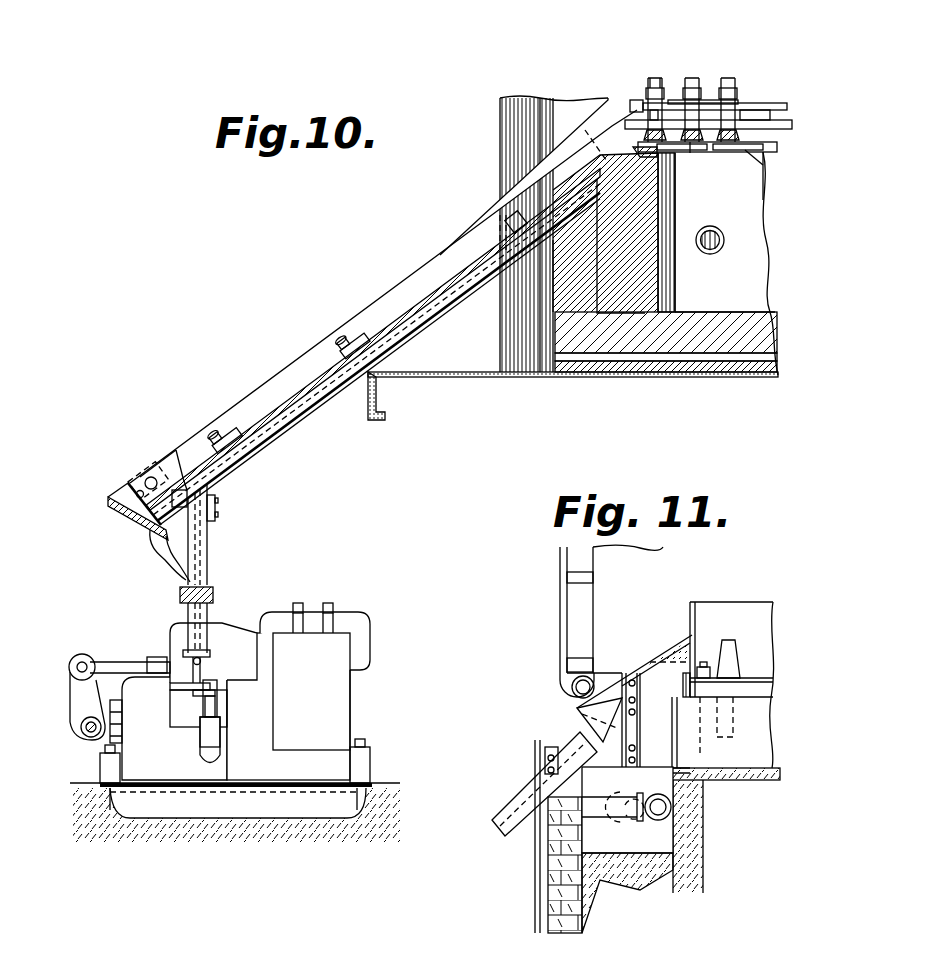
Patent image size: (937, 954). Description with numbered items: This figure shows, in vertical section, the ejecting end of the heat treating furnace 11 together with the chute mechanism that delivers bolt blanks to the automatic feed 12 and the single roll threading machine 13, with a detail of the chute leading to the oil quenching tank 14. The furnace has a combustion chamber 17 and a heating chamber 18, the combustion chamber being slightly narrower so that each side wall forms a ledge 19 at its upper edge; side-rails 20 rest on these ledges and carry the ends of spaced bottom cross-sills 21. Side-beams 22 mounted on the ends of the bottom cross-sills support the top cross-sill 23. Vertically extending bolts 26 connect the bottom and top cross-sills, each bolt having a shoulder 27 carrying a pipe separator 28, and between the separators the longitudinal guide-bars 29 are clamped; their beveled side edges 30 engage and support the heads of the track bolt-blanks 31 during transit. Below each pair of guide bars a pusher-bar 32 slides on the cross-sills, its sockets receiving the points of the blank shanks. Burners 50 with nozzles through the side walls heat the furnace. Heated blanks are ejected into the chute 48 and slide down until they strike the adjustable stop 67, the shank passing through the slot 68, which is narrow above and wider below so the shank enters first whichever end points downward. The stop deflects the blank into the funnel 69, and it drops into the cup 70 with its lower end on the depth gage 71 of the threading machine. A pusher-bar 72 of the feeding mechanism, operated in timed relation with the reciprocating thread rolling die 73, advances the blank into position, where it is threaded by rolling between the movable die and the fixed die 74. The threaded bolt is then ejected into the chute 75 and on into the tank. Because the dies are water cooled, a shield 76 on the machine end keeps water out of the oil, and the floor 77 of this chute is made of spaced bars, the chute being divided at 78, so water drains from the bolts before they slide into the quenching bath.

In FIG. 10, the heat treating furnace 11 is at (640, 350).
In FIG. 10, the automatic feed 12 is at (208, 563).
In FIG. 10, the single roll threading machine 13 is at (340, 698).
In FIG. 11, the single roll threading machine 13 is at (752, 731).
In FIG. 11, the tank 14 is at (537, 867).
In FIG. 10, the combustion chamber 17 is at (790, 285).
In FIG. 10, the heating chamber 18 is at (757, 80).
In FIG. 10, the ledge 19 is at (765, 200).
In FIG. 10, the side-rails 20 is at (745, 150).
In FIG. 10, the bottom cross-sills 21 is at (705, 130).
In FIG. 10, the side-beams 22 is at (747, 97).
In FIG. 10, the top cross-sill 23 is at (652, 100).
In FIG. 10, the bolts 26 is at (647, 100).
In FIG. 10, the shoulder or elongated intermediate portion 27 is at (720, 100).
In FIG. 10, the pipe separator 28 is at (760, 93).
In FIG. 10, the guide-bars 29 is at (637, 103).
In FIG. 10, the beveled side edges 30 is at (775, 120).
In FIG. 10, the track bolt-blanks 31 is at (343, 350).
In FIG. 10, the pusher-bar 32 is at (777, 147).
In FIG. 10, the chute 48 is at (320, 385).
In FIG. 10, the burners 50 is at (724, 240).
In FIG. 10, the adjustable stop 67 is at (118, 502).
In FIG. 10, the slot 68 is at (182, 477).
In FIG. 10, the funnel 69 is at (183, 542).
In FIG. 10, the cup 70 is at (210, 610).
In FIG. 10, the depth gage 71 is at (200, 692).
In FIG. 10, the pusher-bar 72 is at (138, 665).
In FIG. 10, the reciprocating thread rolling die 73 is at (213, 697).
In FIG. 10, the fixed die 74 is at (203, 703).
In FIG. 11, the chute 75 is at (665, 653).
In FIG. 11, the shield 76 is at (560, 627).
In FIG. 11, the floor 77 is at (577, 708).
In FIG. 11, the division of the chute 78 is at (575, 731).